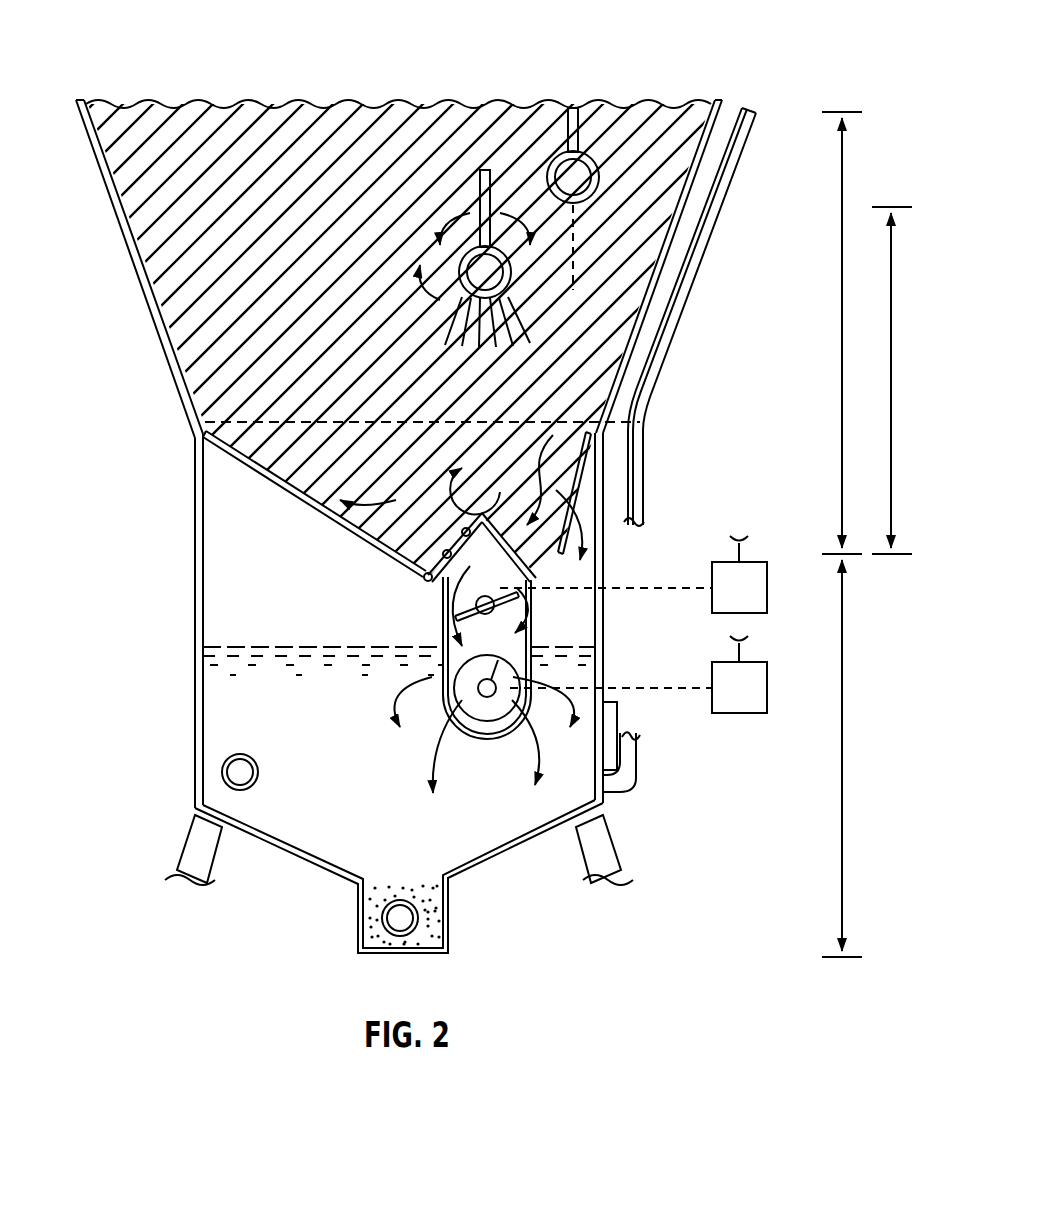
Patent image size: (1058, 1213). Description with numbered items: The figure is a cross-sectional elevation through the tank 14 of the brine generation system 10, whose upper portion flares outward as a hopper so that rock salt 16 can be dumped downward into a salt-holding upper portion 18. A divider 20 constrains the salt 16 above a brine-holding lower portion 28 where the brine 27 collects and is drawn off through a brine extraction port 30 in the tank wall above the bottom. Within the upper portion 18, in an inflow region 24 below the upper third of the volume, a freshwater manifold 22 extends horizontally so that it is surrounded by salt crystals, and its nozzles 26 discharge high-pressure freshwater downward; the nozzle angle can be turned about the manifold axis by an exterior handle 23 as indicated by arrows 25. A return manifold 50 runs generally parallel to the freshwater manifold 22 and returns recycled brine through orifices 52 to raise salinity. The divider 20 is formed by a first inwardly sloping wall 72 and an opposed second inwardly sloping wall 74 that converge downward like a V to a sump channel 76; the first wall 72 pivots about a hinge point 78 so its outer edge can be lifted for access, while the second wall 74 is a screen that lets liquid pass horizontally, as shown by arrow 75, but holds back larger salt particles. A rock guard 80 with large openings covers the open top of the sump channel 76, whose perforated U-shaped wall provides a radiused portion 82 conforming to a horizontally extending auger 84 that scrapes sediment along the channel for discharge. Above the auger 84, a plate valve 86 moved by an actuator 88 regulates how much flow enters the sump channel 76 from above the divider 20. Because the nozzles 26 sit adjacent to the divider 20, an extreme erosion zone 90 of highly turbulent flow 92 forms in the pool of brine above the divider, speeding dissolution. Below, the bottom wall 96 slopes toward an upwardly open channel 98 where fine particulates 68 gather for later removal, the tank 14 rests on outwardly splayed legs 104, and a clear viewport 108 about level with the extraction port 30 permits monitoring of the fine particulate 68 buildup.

The brine generation system 10 is at (797, 88).
The tank 14 is at (127, 272).
The rock salt 16 is at (224, 253).
The salt-holding upper portion 18 is at (840, 302).
The divider 20 is at (262, 528).
The freshwater manifold 22 is at (460, 270).
The exterior handle 23 is at (495, 175).
The inflow region 24 is at (893, 365).
The arrows 25 is at (448, 228).
The nozzles 26 is at (418, 326).
The brine 27 is at (386, 848).
The brine-holding lower portion 28 is at (845, 705).
The brine extraction port 30 is at (225, 785).
The return manifold 50 is at (600, 170).
The orifices 52 is at (583, 245).
The fine particulates 68 is at (413, 888).
The first inwardly sloping wall 72 is at (240, 458).
The second inwardly sloping wall 74 is at (587, 492).
The arrow 75 is at (600, 532).
The sump channel 76 is at (443, 614).
The hinge point 78 is at (424, 580).
The rock guard 80 is at (440, 548).
The radiused portion 82 is at (473, 742).
The auger 84 is at (460, 700).
The plate valve 86 is at (440, 604).
The actuator 88 is at (500, 610).
The extreme erosion zone 90 is at (656, 378).
The turbulent flow 92 is at (400, 505).
The bottom wall 96 is at (322, 866).
The upwardly open channel 98 is at (460, 908).
The legs 104 is at (200, 845).
The clear viewport 108 is at (620, 703).